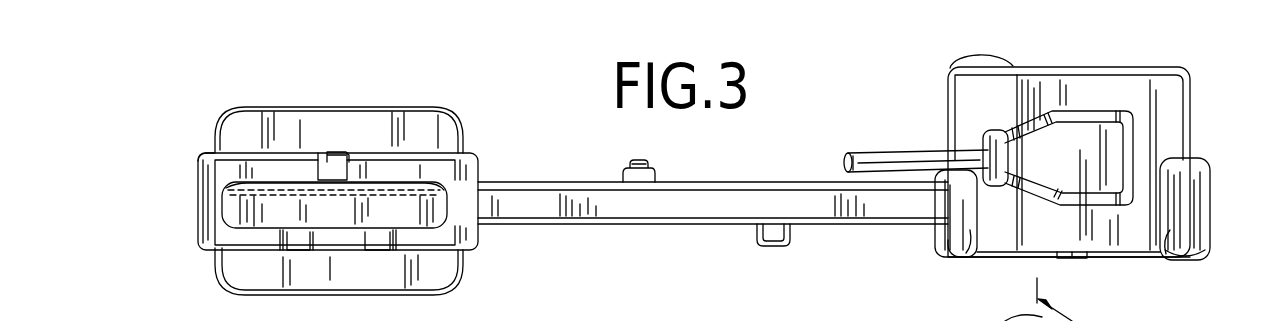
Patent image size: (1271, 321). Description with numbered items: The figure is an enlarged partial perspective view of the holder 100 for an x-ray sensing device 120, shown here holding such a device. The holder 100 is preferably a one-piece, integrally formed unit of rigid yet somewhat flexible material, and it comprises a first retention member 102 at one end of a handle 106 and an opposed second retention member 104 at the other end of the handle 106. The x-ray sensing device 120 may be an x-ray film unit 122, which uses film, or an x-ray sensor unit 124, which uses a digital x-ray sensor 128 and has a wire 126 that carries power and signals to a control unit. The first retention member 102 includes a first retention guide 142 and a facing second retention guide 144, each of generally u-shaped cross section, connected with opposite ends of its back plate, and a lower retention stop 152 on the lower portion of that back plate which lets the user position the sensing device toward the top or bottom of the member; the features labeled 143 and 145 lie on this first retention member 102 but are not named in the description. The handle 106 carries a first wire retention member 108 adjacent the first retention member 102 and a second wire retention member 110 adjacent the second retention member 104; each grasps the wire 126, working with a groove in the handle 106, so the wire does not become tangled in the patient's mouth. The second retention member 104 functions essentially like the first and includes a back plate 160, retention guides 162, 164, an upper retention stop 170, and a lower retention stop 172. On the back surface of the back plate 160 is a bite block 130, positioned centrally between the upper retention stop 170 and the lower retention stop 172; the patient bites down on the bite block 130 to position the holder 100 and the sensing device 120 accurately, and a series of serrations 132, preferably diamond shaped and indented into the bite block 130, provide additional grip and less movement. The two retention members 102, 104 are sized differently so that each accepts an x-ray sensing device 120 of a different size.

The holder 100 is at (580, 112).
The first retention member 102 is at (920, 268).
The second retention member 104 is at (195, 260).
The handle 106 is at (710, 183).
The first wire retention member 108 is at (772, 232).
The second wire retention member 110 is at (636, 165).
The x-ray sensing device 120 is at (270, 102).
The x-ray film unit 122 is at (374, 110).
The x-ray sensor unit 124 is at (953, 59).
The wire 126 is at (879, 152).
The digital x-ray sensor 128 is at (1093, 141).
The bite block 130 is at (410, 210).
The serrations 132 is at (395, 196).
The first retention guide 142 is at (1196, 252).
The clip wall 143 is at (1173, 238).
The second retention guide 144 is at (940, 238).
The clip 145 is at (966, 232).
The lower retention stop 152 is at (1065, 258).
The back plate 160 is at (277, 170).
The retention guide 162 is at (472, 155).
The retention guide 164 is at (210, 152).
The upper retention stop 170 is at (333, 158).
The lower retention stop 172 is at (299, 252).